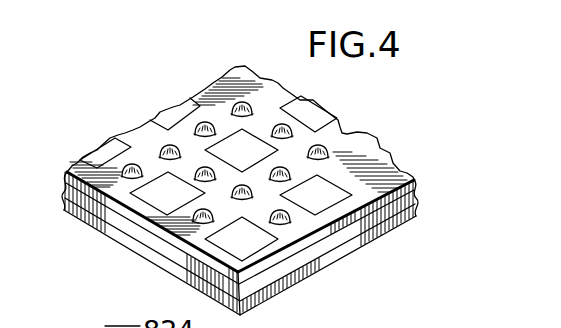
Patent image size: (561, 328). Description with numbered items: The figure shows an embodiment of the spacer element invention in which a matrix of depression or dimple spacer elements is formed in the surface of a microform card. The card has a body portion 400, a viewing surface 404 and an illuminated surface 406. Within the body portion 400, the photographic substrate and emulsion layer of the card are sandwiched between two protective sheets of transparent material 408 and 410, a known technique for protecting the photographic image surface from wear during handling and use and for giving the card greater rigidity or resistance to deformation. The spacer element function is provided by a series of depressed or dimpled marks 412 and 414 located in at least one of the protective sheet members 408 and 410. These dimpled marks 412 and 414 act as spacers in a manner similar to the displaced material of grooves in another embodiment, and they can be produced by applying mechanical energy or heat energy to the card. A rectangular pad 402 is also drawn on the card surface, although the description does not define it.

The body portion 400 is at (245, 248).
The contact pad 402 is at (303, 113).
The viewing surface 404 is at (335, 135).
The illuminated surface 406 is at (158, 263).
The protective sheet of transparent material 408 is at (293, 277).
The protective sheet of transparent material 410 is at (352, 217).
The depressed or dimpled mark 412 is at (290, 223).
The depressed or dimpled mark 414 is at (240, 103).